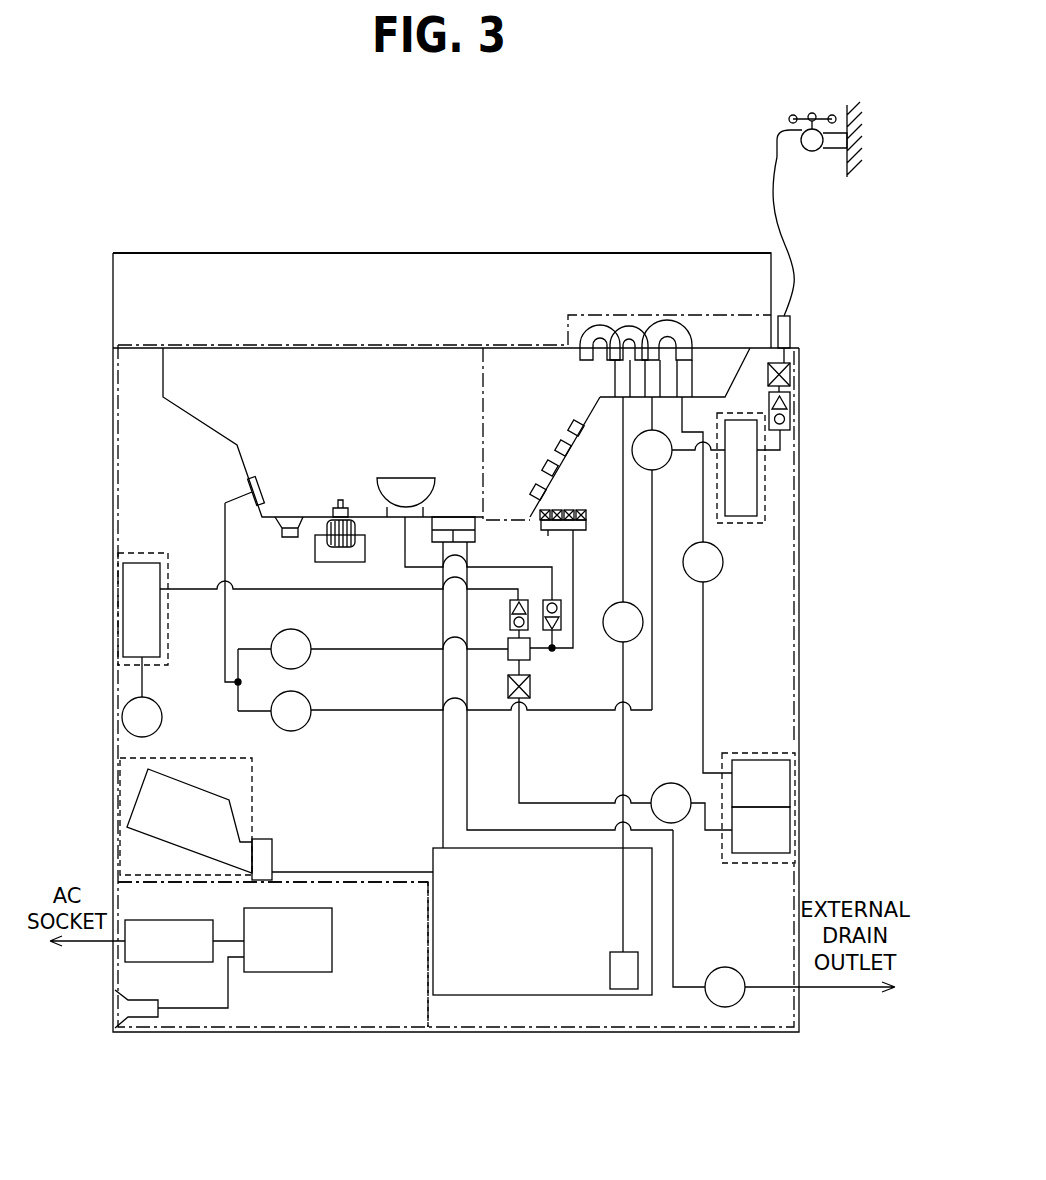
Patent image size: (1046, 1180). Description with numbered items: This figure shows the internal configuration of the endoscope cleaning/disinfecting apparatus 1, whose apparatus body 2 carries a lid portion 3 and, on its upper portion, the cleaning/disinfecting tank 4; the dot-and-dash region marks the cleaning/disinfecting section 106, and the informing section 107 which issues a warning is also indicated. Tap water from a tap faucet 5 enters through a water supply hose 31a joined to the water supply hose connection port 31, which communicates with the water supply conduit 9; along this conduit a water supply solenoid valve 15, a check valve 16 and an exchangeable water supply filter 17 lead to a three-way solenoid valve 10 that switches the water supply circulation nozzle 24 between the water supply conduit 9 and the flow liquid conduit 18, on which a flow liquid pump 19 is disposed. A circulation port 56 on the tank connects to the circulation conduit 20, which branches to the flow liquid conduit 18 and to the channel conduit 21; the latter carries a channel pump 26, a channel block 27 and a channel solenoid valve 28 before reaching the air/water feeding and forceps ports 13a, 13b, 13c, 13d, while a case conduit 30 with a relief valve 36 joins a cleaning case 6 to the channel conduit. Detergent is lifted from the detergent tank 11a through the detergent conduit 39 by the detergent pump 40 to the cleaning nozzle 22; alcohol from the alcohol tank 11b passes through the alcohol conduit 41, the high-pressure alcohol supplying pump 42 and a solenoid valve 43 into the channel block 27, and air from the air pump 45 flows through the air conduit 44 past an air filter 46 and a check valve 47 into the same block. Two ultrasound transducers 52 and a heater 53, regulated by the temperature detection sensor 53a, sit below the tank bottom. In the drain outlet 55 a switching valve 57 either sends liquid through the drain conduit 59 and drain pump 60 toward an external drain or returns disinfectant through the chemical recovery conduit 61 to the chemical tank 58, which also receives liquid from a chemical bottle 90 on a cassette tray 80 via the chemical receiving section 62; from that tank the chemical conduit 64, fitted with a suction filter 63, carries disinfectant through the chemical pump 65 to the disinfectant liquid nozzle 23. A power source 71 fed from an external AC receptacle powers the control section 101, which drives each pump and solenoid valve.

The endoscope cleaning/disinfecting apparatus 1 is at (603, 181).
The apparatus body 2 is at (799, 712).
The lid portion 3 is at (283, 253).
The cleaning/disinfecting tank 4 is at (333, 380).
The tap faucet 5 is at (812, 158).
The cleaning case 6 is at (405, 478).
The water supply conduit 9 is at (689, 451).
The three-way solenoid valve 10 is at (657, 469).
The detergent tank 11a is at (790, 787).
The alcohol tank 11b is at (790, 833).
The air/water feeding and forceps port 13a is at (531, 493).
The air/water feeding and forceps port 13b is at (543, 470).
The air/water feeding and forceps port 13c is at (556, 450).
The air/water feeding and forceps port 13d is at (569, 430).
The water supply solenoid valve 15 is at (790, 378).
The check valve 16 is at (790, 421).
The water supply filter 17 is at (741, 516).
The flow liquid conduit 18 is at (385, 710).
The flow liquid pump 19 is at (308, 721).
The circulation conduit 20 is at (225, 535).
The channel conduit 21 is at (385, 649).
The cleaning nozzle 22 is at (666, 320).
The disinfectant liquid nozzle 23 is at (601, 324).
The water supply circulation nozzle 24 is at (630, 326).
The channel pump 26 is at (310, 659).
The channel block 27 is at (530, 655).
The channel solenoid valve 28 is at (582, 510).
The case conduit 30 is at (516, 567).
The water supply hose connection port 31 is at (790, 333).
The water supply hose 31a is at (790, 258).
The relief valve 36 is at (548, 600).
The detergent conduit 39 is at (705, 658).
The detergent pump 40 is at (699, 582).
The alcohol conduit 41 is at (519, 748).
The high-pressure alcohol supplying pump 42 is at (671, 783).
The solenoid valve 43 is at (530, 692).
The air conduit 44 is at (351, 589).
The air pump 45 is at (162, 717).
The air filter 46 is at (160, 633).
The check valve 47 is at (510, 620).
The ultrasound transducers 52 is at (280, 528).
The heater 53 is at (315, 560).
The temperature detection sensor 53a is at (340, 503).
The drain outlet 55 is at (450, 517).
The circulation port 56 is at (262, 492).
The switching valve 57 is at (475, 542).
The chemical tank 58 is at (540, 995).
The drain conduit 59 is at (673, 897).
The drain pump 60 is at (725, 967).
The chemical recovery conduit 61 is at (443, 812).
The chemical receiving section 62 is at (340, 872).
The suction filter 63 is at (628, 989).
The chemical conduit 64 is at (623, 770).
The chemical pump 65 is at (621, 642).
The power source 71 is at (188, 962).
The cassette tray 80 is at (120, 758).
The chemical bottle 90 is at (135, 801).
The control section 101 is at (285, 972).
The cleaning/disinfecting section 106 is at (428, 997).
The informing section 107 is at (147, 1012).